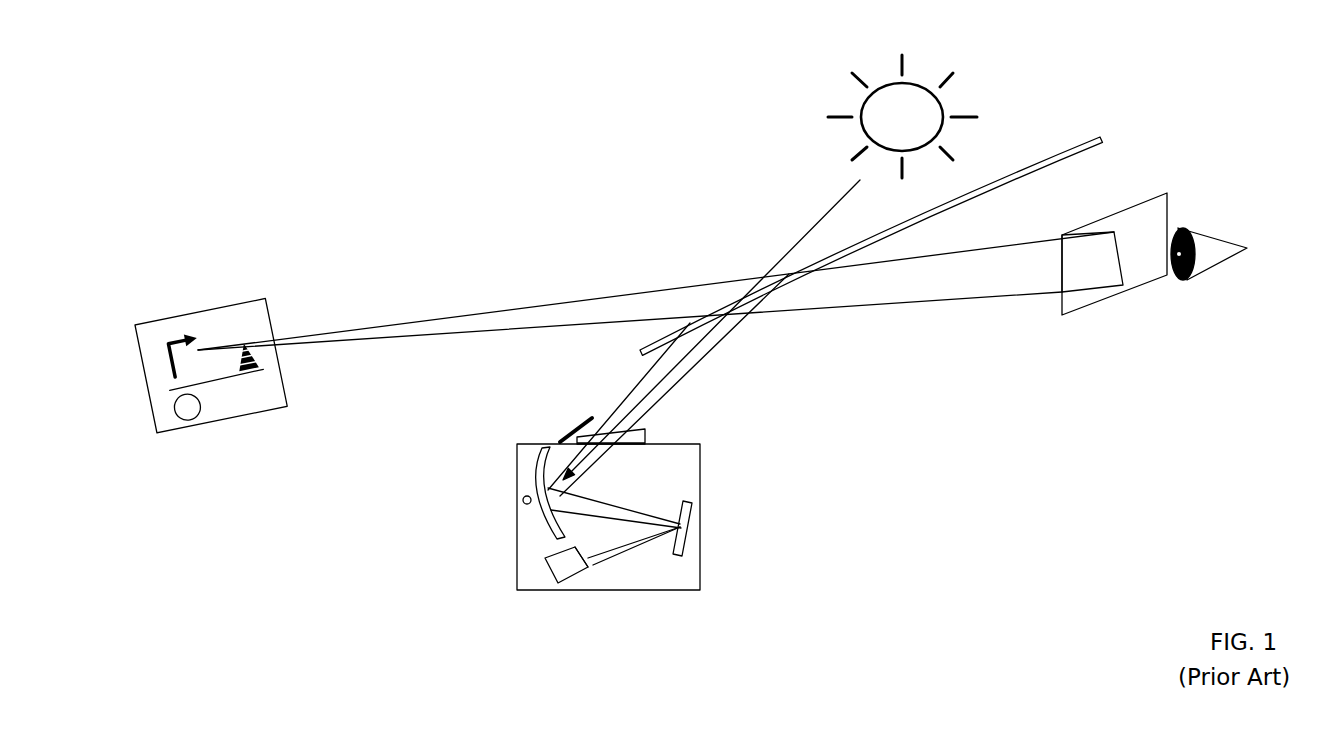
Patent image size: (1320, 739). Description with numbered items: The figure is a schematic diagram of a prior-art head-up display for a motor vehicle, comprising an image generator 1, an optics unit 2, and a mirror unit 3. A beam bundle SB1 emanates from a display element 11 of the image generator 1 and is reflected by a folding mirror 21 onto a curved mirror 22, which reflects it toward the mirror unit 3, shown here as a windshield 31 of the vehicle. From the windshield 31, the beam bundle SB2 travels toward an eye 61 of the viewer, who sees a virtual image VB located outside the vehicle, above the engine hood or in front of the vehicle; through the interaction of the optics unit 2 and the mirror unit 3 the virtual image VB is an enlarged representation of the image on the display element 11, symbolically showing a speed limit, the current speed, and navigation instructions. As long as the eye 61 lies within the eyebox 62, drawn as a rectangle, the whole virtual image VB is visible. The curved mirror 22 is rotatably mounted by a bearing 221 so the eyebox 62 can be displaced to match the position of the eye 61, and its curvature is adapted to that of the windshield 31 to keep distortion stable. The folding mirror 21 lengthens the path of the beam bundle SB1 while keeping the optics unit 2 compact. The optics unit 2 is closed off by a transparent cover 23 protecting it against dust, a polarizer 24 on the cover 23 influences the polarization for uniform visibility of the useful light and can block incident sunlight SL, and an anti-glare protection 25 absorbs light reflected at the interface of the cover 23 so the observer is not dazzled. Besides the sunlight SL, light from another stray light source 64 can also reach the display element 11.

The image generator 1 is at (547, 567).
The display element 11 is at (590, 573).
The optics unit 2 is at (700, 465).
The folding mirror 21 is at (690, 525).
The curved mirror 22 is at (537, 462).
The bearing 221 is at (522, 497).
The transparent cover 23 is at (647, 432).
The polarizer 24 is at (633, 422).
The anti-glare protection 25 is at (573, 425).
The mirror unit 3 is at (857, 238).
The windshield 31 is at (871, 246).
The eye 61 is at (1210, 238).
The eyebox 62 is at (1077, 312).
The stray light source 64 is at (862, 103).
The sunlight SL is at (780, 258).
The beam bundle SB1 is at (633, 543).
The beam bundle SB2 is at (930, 287).
The virtual image VB is at (155, 392).